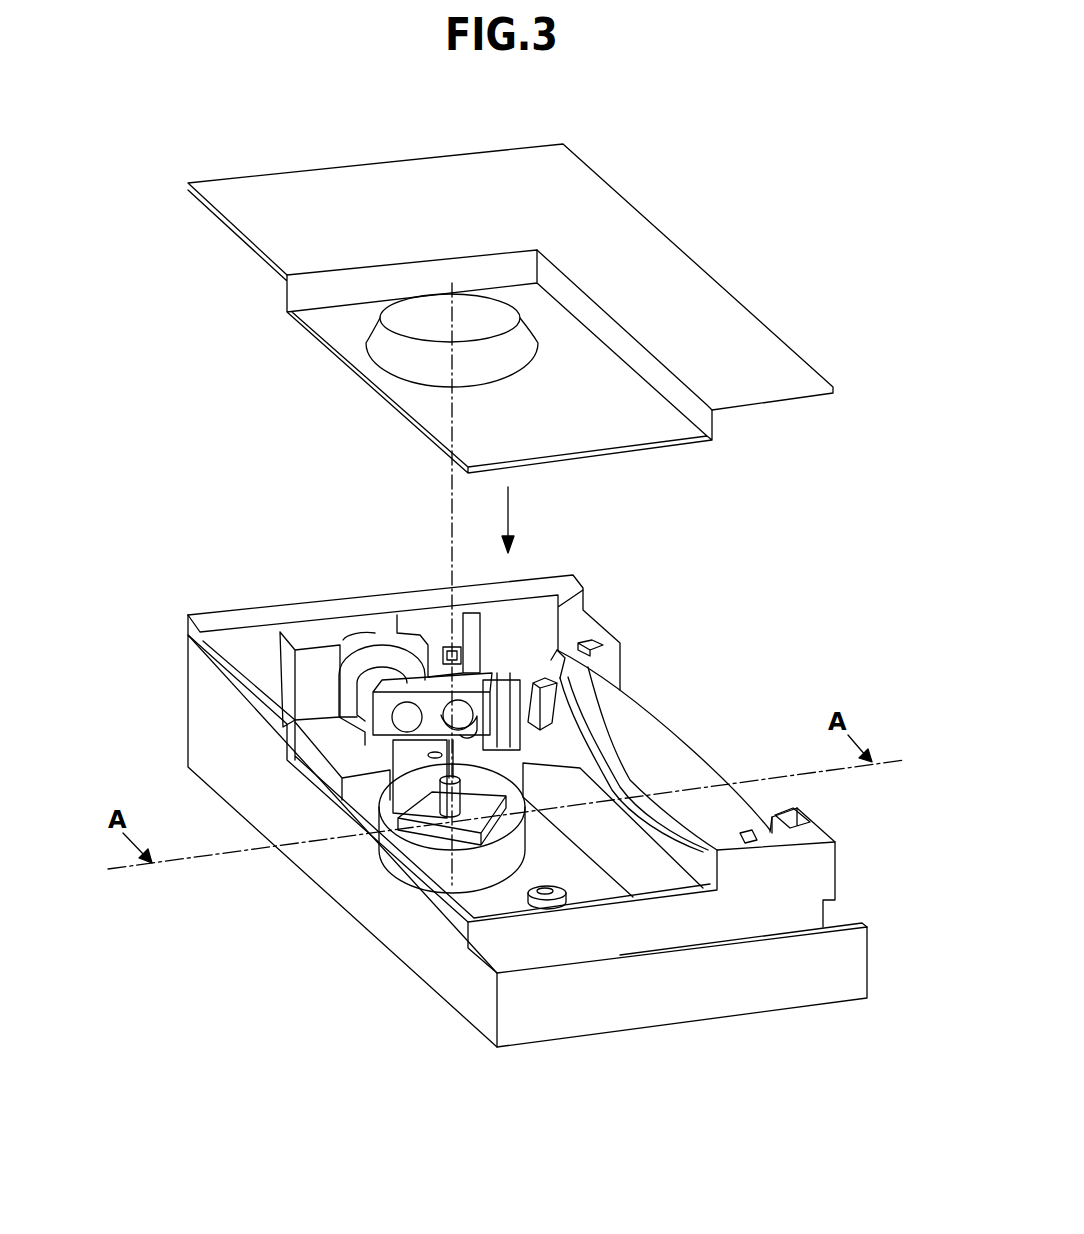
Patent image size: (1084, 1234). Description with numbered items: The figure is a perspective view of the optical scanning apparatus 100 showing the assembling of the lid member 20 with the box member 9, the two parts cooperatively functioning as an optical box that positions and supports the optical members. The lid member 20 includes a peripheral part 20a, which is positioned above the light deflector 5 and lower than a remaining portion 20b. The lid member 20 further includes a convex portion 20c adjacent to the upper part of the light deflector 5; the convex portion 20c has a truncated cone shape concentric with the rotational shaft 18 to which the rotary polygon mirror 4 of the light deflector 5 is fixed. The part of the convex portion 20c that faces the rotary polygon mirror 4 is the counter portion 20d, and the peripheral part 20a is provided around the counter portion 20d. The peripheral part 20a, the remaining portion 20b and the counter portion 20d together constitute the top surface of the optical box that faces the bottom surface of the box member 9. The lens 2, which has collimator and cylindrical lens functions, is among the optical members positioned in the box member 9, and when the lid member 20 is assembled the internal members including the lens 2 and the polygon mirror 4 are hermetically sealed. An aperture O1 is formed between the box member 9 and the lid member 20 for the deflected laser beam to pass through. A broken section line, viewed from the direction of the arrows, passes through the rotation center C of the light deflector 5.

The optical scanning apparatus 100 is at (497, 828).
The lid member 20 is at (486, 308).
The peripheral part 20a is at (420, 404).
The remaining portion 20b is at (253, 219).
The convex portion 20c is at (380, 338).
The counter portion 20d is at (497, 314).
The box member 9 is at (202, 748).
The lens 2 is at (393, 685).
The rotary polygon mirror 4 is at (387, 738).
The rotational shaft 18 is at (612, 750).
The light deflector 5 is at (508, 900).
The rotation center C is at (410, 873).
The aperture O1 is at (742, 680).